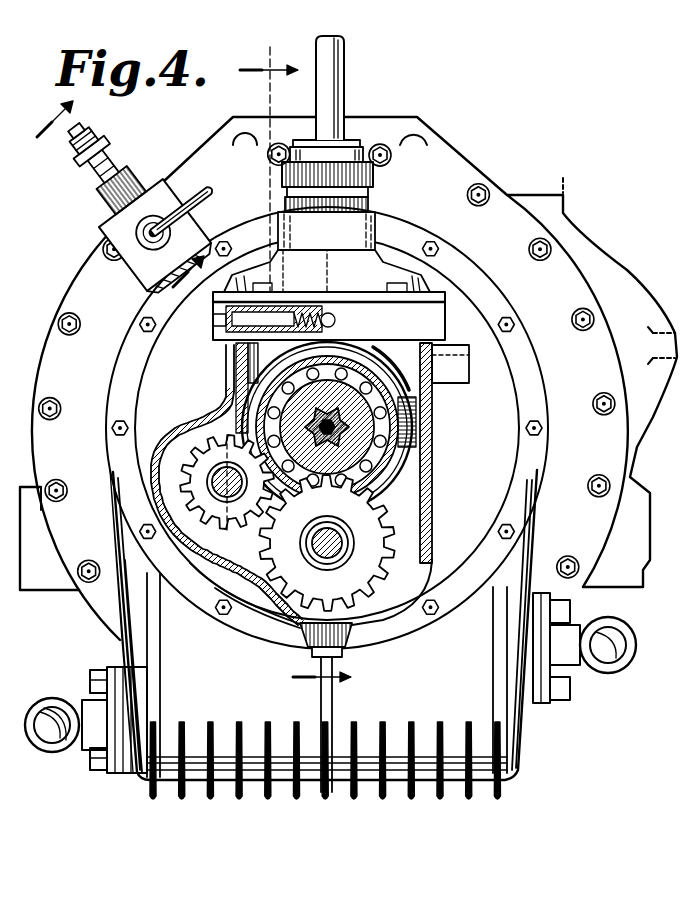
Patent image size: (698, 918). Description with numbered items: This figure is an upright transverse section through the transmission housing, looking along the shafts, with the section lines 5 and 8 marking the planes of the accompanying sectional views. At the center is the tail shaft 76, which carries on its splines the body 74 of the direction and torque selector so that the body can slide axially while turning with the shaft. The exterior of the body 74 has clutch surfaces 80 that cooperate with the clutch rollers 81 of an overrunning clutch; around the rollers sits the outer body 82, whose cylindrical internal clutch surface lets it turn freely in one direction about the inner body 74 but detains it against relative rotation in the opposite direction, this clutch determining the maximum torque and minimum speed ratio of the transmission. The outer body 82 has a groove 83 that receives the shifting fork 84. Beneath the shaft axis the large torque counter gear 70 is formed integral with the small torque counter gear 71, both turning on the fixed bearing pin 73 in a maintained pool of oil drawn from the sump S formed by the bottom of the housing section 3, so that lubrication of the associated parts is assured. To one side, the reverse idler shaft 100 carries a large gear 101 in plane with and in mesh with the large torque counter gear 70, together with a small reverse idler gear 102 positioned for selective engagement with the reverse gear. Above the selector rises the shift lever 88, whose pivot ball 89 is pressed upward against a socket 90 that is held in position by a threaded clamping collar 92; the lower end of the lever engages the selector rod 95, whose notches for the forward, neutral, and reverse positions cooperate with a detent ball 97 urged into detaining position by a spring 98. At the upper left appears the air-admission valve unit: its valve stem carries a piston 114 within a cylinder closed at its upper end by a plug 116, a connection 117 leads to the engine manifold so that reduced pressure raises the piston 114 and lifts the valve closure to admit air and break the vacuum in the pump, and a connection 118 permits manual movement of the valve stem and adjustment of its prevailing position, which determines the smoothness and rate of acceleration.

The piston 114 is at (82, 286).
The housing lug 3 is at (39, 495).
The socket 90 is at (380, 152).
The sump S is at (463, 700).
The outer body 82 is at (248, 398).
The clutch rollers 81 is at (245, 347).
The clutch surfaces 80 is at (262, 372).
The shifting fork 84 is at (400, 394).
The small torque counter gear 71 is at (303, 563).
The body 74 is at (403, 450).
The groove 83 is at (400, 473).
The tail shaft 76 is at (365, 434).
The fixed bearing pin 73 is at (340, 542).
The large torque counter gear 70 is at (272, 573).
The reverse idler shaft 100 is at (210, 480).
The large gear 101 is at (237, 540).
The small reverse idler gear 102 is at (250, 540).
The selector rod 95 is at (338, 320).
The detent ball 97 is at (318, 320).
The spring 98 is at (293, 300).
The threaded clamping collar 92 is at (353, 177).
The pivot ball 89 is at (343, 137).
The shift lever 88 is at (345, 78).
The section line 8- 8 is at (295, 371).
The section line 5- 5 is at (117, 196).
The plug 116 is at (103, 213).
The connection 118 is at (88, 162).
The connection 117 is at (188, 200).